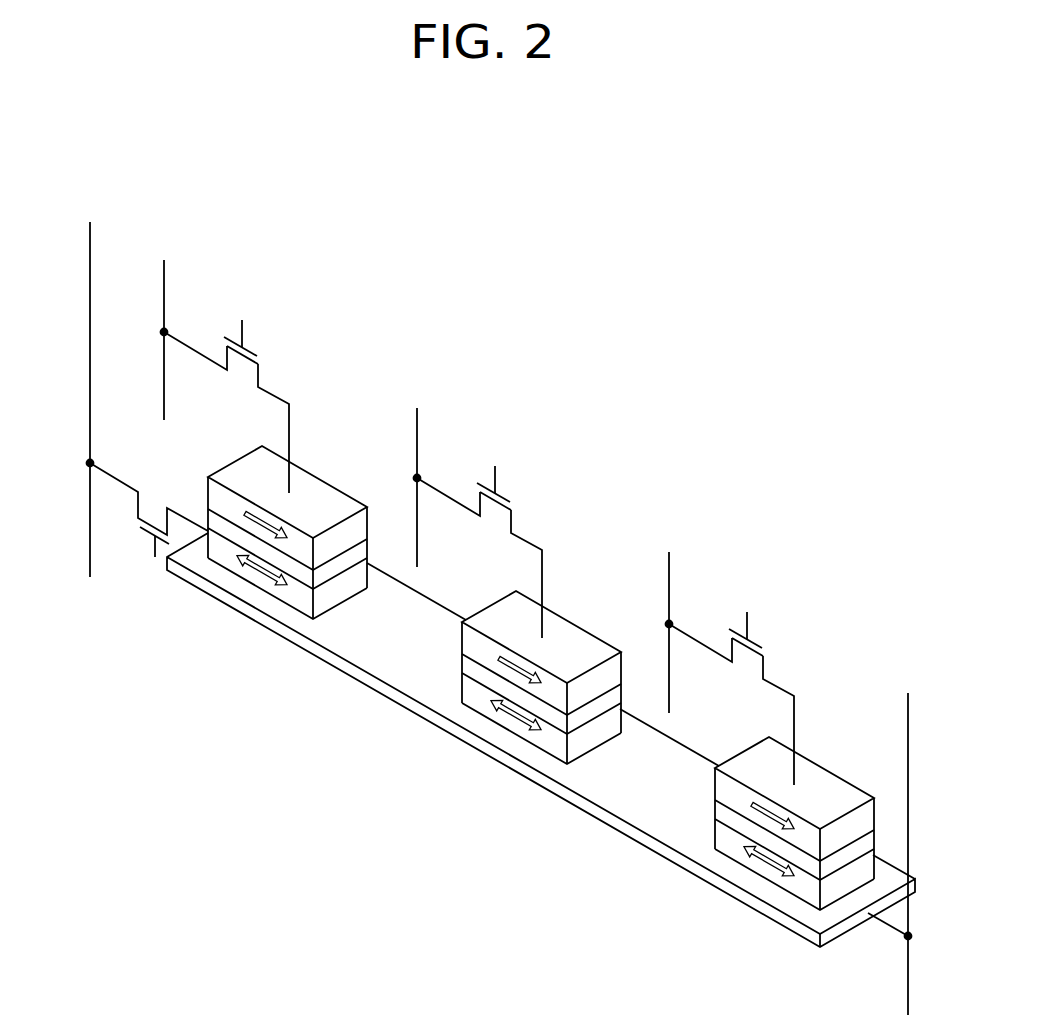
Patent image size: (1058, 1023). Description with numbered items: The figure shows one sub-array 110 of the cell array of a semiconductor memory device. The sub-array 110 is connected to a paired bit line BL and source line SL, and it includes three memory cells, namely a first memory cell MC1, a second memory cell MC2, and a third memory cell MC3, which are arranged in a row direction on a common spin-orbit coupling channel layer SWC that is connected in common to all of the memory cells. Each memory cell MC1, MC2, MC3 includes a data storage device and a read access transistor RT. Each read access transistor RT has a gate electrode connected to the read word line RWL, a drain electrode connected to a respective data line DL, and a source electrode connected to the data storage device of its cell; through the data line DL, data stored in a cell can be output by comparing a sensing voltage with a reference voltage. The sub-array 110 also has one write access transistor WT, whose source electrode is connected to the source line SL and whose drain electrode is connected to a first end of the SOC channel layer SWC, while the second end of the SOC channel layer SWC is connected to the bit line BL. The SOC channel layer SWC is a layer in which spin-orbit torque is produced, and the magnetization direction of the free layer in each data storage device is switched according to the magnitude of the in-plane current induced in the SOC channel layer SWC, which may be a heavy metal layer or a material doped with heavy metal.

The sub-array 110 is at (874, 274).
The source line SL is at (90, 383).
The data line DL is at (415, 470).
The read word line RWL is at (494, 468).
The read access transistor RT is at (495, 510).
The write access transistor WT is at (154, 509).
The spin-orbit coupling channel layer SWC is at (365, 673).
The bit line BL is at (895, 838).
The first memory cell MC1 is at (319, 477).
The second memory cell MC2 is at (573, 622).
The third memory cell MC3 is at (826, 768).